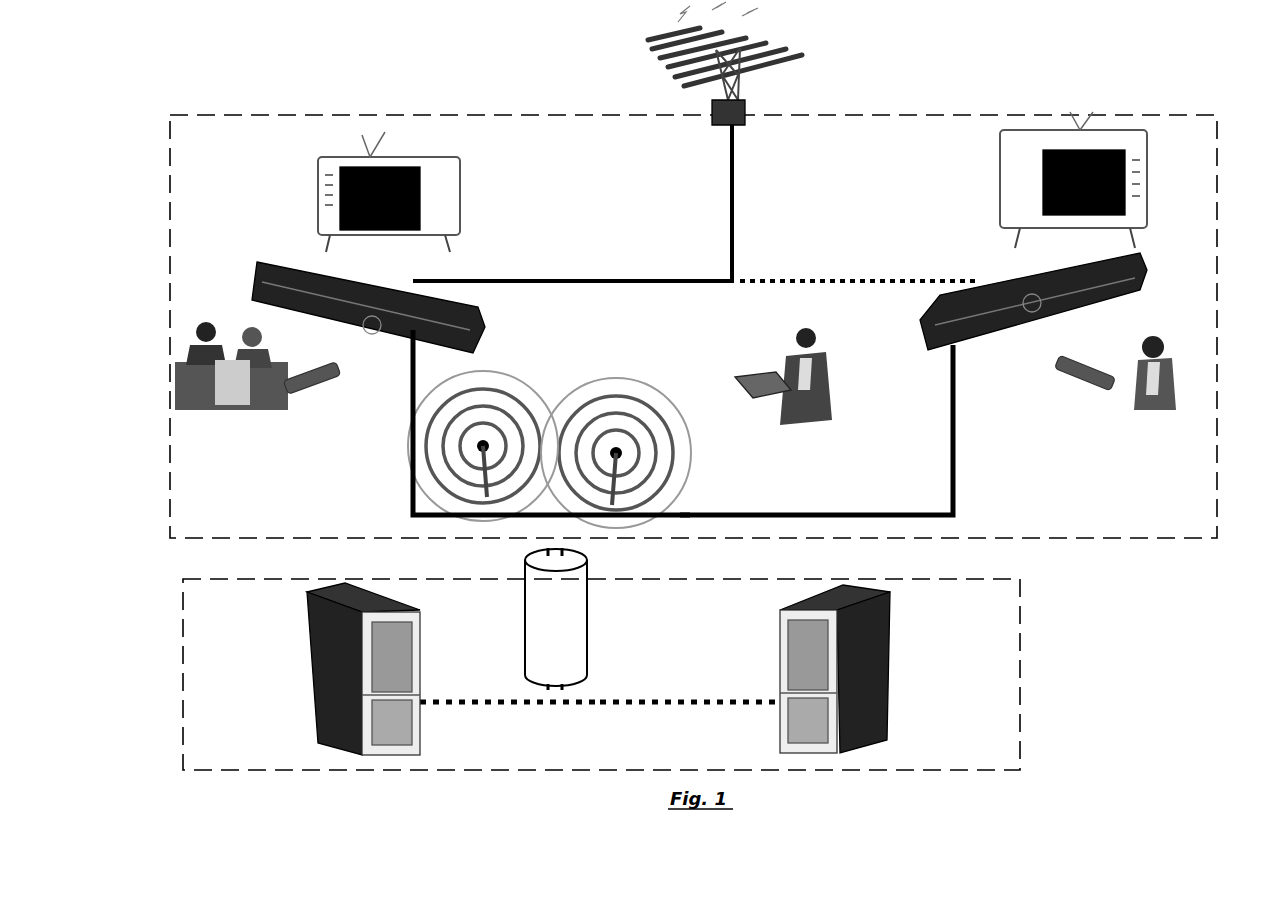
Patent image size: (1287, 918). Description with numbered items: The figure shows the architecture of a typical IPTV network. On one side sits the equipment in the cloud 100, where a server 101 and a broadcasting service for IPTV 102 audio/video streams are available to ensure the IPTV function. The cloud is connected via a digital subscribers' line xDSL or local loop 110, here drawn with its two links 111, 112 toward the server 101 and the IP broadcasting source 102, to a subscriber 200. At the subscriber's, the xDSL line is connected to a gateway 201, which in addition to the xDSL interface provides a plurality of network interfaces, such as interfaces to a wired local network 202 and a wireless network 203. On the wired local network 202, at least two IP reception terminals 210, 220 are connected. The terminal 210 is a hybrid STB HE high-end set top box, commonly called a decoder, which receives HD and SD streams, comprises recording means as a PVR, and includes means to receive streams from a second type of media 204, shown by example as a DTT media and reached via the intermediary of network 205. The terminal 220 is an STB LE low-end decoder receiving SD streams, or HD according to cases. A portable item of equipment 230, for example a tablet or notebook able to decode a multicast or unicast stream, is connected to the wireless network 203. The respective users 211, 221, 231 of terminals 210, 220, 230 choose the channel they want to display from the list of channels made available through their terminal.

The cloud 100 is at (1022, 703).
The server 101 is at (887, 672).
The broadcasting service for IPTV 102 is at (315, 672).
The local loop 110 is at (588, 610).
The connection between server and network 111 is at (626, 700).
The connection between IP broadcasting source and network 112 is at (515, 692).
The subscriber 200 is at (925, 113).
The gateway 201 is at (410, 545).
The wired local network 202 is at (957, 447).
The wireless network 203 is at (612, 398).
The media 204 is at (656, 76).
The network 205 is at (686, 278).
The hybrid terminal 210 is at (305, 255).
The user 211 is at (196, 353).
The low end terminal 220 is at (1102, 247).
The user 221 is at (1179, 357).
The portable equipment 230 is at (746, 378).
The user 231 is at (838, 394).